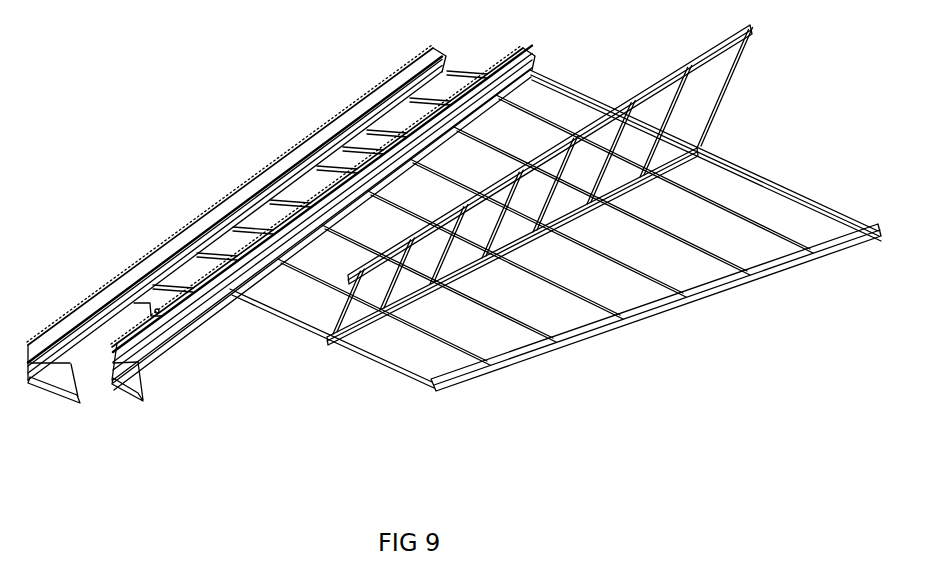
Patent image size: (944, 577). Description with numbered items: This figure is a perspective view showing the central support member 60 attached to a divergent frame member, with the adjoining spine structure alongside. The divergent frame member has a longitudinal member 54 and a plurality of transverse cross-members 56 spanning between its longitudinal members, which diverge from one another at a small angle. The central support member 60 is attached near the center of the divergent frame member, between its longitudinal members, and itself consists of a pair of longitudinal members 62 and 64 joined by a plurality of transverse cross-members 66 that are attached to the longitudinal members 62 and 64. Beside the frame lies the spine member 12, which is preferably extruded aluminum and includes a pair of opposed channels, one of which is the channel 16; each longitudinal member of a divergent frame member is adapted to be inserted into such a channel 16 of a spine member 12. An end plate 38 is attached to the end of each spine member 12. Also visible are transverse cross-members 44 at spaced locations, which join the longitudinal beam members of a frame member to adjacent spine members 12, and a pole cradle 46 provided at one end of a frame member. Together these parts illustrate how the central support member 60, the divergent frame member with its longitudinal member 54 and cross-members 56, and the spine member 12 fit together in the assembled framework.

The spine member 12 is at (63, 323).
The channel 16 is at (188, 328).
The end plate 38 is at (48, 393).
The transverse cross-member 44 is at (462, 70).
The pole cradle 46 is at (161, 308).
The longitudinal member 54 is at (648, 313).
The transverse cross-member 56 is at (780, 191).
The central support member 60 is at (559, 207).
The longitudinal member 62 is at (627, 93).
The longitudinal member 64 is at (367, 323).
The transverse cross-member 66 is at (730, 63).